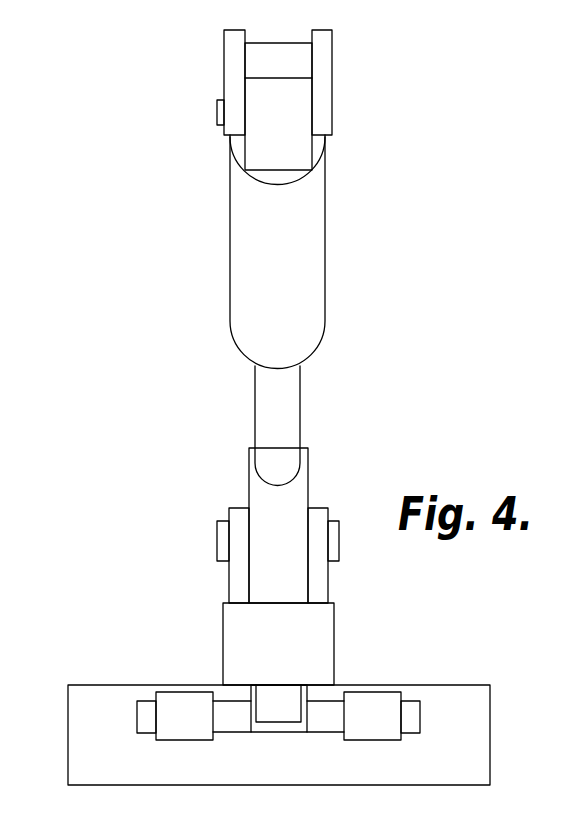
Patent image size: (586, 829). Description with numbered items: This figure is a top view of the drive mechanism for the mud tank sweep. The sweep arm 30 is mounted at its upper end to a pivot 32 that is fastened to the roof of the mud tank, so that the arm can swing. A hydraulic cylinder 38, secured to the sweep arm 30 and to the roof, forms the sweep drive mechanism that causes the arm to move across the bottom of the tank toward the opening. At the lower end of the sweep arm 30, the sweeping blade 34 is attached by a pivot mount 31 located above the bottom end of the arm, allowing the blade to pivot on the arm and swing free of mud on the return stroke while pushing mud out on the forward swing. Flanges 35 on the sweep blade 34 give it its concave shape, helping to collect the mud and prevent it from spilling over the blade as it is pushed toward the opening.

The pivot 32 is at (332, 75).
The hydraulic cylinder 38 is at (326, 230).
The sweep arm 30 is at (223, 627).
The pivot mount 31 is at (183, 692).
The sweeping blade 34 is at (368, 684).
The flanges 35 is at (68, 711).